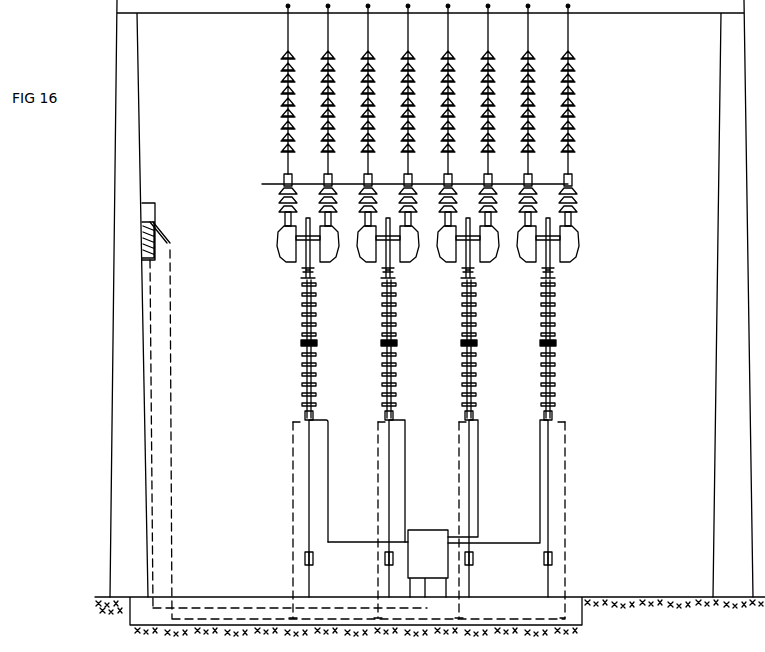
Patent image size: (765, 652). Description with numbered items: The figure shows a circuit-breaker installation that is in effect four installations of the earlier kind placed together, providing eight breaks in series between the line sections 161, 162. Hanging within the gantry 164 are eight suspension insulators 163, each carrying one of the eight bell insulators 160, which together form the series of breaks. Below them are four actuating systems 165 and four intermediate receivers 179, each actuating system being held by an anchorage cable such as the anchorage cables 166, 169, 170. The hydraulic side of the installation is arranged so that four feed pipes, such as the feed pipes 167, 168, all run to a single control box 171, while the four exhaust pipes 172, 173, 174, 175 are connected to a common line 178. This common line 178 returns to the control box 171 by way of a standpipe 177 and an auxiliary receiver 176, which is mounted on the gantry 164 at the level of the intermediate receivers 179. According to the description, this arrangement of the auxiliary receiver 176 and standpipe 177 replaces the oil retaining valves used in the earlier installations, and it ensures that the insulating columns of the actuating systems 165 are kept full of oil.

The bell insulator 160 is at (613, 197).
The line section 161 is at (283, 203).
The line section 162 is at (577, 210).
The suspension insulator 163 is at (284, 98).
The gantry 164 is at (725, 258).
The actuating system 165 is at (297, 326).
The anchorage cable 166 is at (309, 489).
The feed pipe 167 is at (352, 542).
The feed pipe 168 is at (405, 480).
The anchorage cable 169 is at (470, 486).
The anchorage cable 170 is at (550, 481).
The control box 171 is at (425, 540).
The exhaust pipe 172 is at (290, 551).
The exhaust pipe 173 is at (378, 557).
The exhaust pipe 174 is at (462, 578).
The exhaust pipe 175 is at (565, 563).
The auxiliary receiver 176 is at (157, 216).
The standpipe 177 is at (167, 240).
The common line 178 is at (170, 456).
The intermediate receiver 179 is at (376, 262).